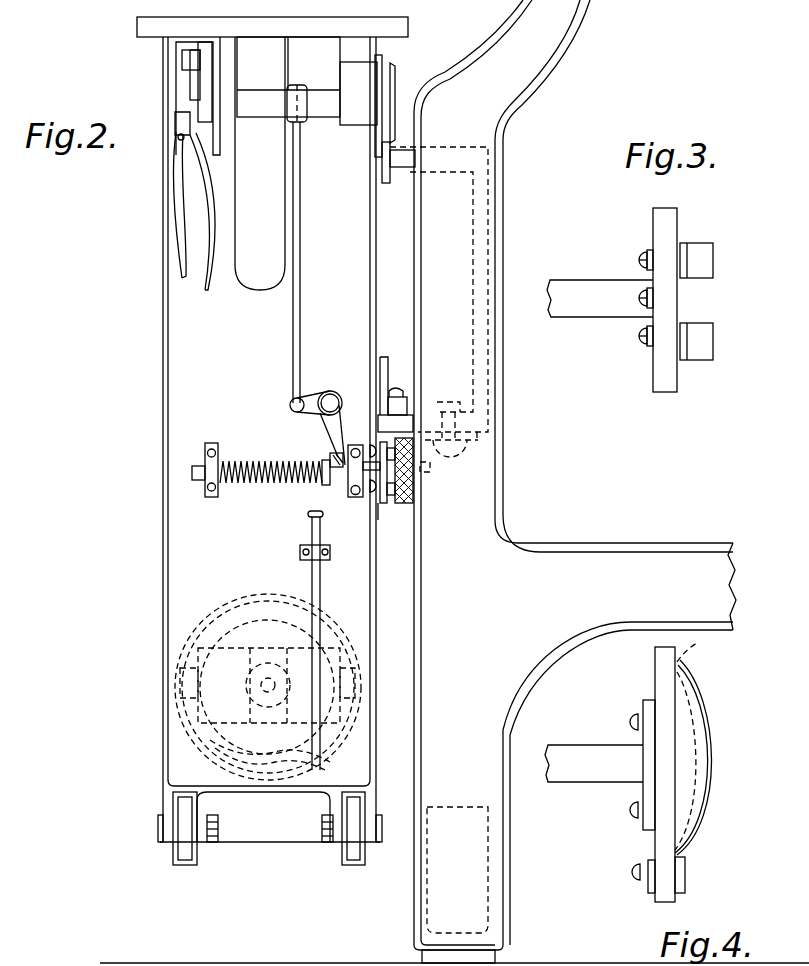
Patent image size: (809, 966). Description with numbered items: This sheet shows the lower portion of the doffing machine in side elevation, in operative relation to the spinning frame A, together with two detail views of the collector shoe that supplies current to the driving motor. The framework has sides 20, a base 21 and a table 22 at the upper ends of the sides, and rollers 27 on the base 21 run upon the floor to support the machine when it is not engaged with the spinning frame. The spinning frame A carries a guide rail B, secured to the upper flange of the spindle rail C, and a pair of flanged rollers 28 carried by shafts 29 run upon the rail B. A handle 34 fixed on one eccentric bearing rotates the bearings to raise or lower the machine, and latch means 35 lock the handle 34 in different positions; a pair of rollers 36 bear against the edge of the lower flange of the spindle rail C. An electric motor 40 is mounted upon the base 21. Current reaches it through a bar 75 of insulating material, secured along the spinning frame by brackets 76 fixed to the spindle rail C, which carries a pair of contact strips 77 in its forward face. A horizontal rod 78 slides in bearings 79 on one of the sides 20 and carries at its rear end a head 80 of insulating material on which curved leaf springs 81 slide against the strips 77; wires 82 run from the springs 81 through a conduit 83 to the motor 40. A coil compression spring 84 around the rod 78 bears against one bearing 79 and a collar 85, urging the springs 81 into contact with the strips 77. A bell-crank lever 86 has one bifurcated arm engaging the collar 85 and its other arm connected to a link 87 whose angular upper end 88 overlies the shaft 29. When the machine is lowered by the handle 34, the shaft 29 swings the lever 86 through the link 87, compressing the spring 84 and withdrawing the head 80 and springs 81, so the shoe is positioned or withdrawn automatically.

In FIG. 2, the sides 20 is at (170, 393).
In FIG. 2, the base 21 is at (268, 795).
In FIG. 2, the table 22 is at (140, 28).
In FIG. 2, the rollers 27 is at (352, 857).
In FIG. 2, the flanged rollers 28 is at (385, 88).
In FIG. 2, the shafts 29 is at (322, 103).
In FIG. 2, the handle 34 is at (205, 262).
In FIG. 2, the latch means 35 is at (178, 130).
In FIG. 2, the rollers 36 is at (395, 422).
In FIG. 2, the electric motor 40 is at (180, 628).
In FIG. 2, the bar 75 is at (375, 504).
In FIG. 2, the brackets 76 is at (470, 445).
In FIG. 2, the contact strips 77 is at (405, 470).
In FIG. 2, the horizontal rod 78 is at (200, 478).
In FIG. 3, the horizontal rod 78 is at (578, 307).
In FIG. 4, the horizontal rod 78 is at (580, 775).
In FIG. 2, the bearings 79 is at (210, 450).
In FIG. 2, the head 80 is at (384, 500).
In FIG. 3, the head 80 is at (668, 388).
In FIG. 4, the head 80 is at (660, 840).
In FIG. 3, the curved leaf springs 81 is at (700, 268).
In FIG. 4, the curved leaf springs 81 is at (710, 772).
In FIG. 2, the wires 82 is at (380, 485).
In FIG. 3, the wires 82 is at (640, 300).
In FIG. 4, the wires 82 is at (645, 880).
In FIG. 2, the conduit 83 is at (312, 578).
In FIG. 2, the coil compression spring 84 is at (272, 482).
In FIG. 2, the collar 85 is at (325, 462).
In FIG. 2, the bell-crank lever 86 is at (318, 395).
In FIG. 2, the link 87 is at (302, 322).
In FIG. 2, the angular upper end 88 is at (292, 88).
In FIG. 2, the spinning frame A is at (495, 527).
In FIG. 2, the guide rail B is at (386, 184).
In FIG. 2, the spindle rail C is at (488, 262).